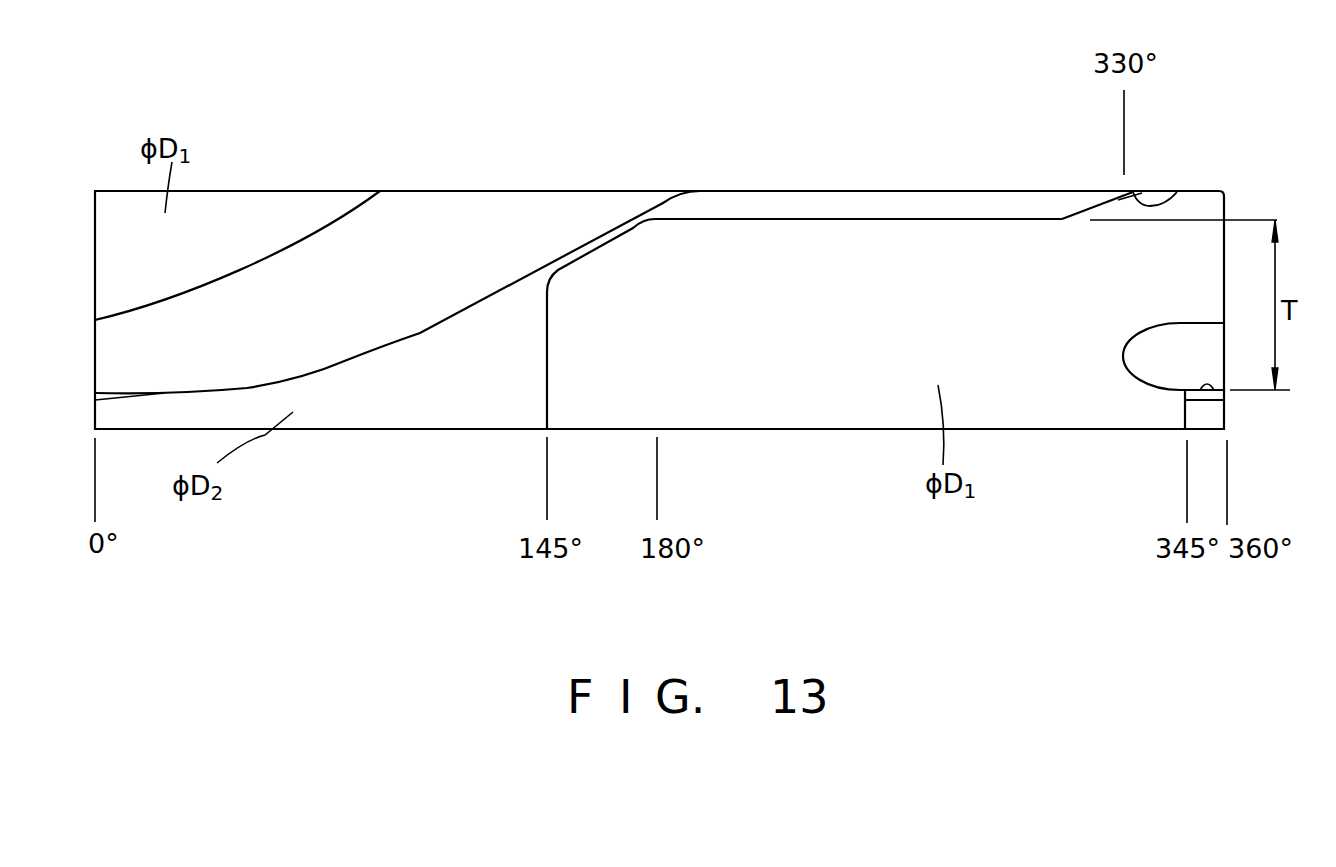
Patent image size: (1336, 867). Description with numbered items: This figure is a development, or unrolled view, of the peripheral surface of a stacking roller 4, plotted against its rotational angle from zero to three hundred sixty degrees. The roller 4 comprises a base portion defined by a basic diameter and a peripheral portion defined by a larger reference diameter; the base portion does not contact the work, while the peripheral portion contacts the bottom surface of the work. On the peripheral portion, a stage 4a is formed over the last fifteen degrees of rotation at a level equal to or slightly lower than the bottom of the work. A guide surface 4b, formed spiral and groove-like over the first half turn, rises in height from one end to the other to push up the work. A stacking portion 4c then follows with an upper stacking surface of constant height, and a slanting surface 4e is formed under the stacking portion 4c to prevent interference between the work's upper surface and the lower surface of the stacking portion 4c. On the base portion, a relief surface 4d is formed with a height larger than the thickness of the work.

The roller 4 is at (489, 186).
The stage 4a is at (1213, 395).
The guide surface 4b is at (313, 257).
The stacking portion 4c is at (960, 190).
The relief surface 4d is at (788, 240).
The slanting surface 4e is at (1174, 193).